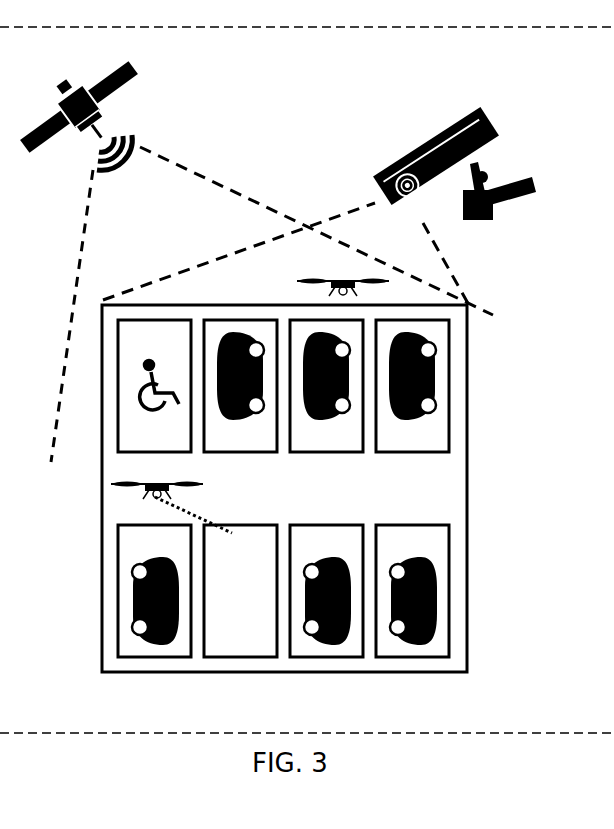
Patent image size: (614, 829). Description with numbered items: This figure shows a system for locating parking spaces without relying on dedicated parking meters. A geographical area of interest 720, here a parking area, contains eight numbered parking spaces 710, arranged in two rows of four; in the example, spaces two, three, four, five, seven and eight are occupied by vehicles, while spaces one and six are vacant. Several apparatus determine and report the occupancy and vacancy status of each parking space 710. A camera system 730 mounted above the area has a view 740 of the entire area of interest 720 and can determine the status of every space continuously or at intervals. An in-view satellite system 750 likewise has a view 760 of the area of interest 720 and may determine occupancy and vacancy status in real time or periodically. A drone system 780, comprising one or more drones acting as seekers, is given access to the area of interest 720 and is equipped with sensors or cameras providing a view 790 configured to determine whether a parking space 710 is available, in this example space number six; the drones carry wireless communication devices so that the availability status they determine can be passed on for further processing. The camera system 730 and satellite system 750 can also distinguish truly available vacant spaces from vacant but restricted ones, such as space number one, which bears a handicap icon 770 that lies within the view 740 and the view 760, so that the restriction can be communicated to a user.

The parking space 710 is at (377, 527).
The geographical area of interest 720 is at (442, 483).
The camera system 730 is at (440, 203).
The view of camera system 740 is at (337, 217).
The in-view satellite system 750 is at (130, 87).
The view of satellite system 760 is at (200, 172).
The handicap icon 770 is at (138, 410).
The drone system 780 is at (296, 282).
The view of drone 790 is at (193, 512).